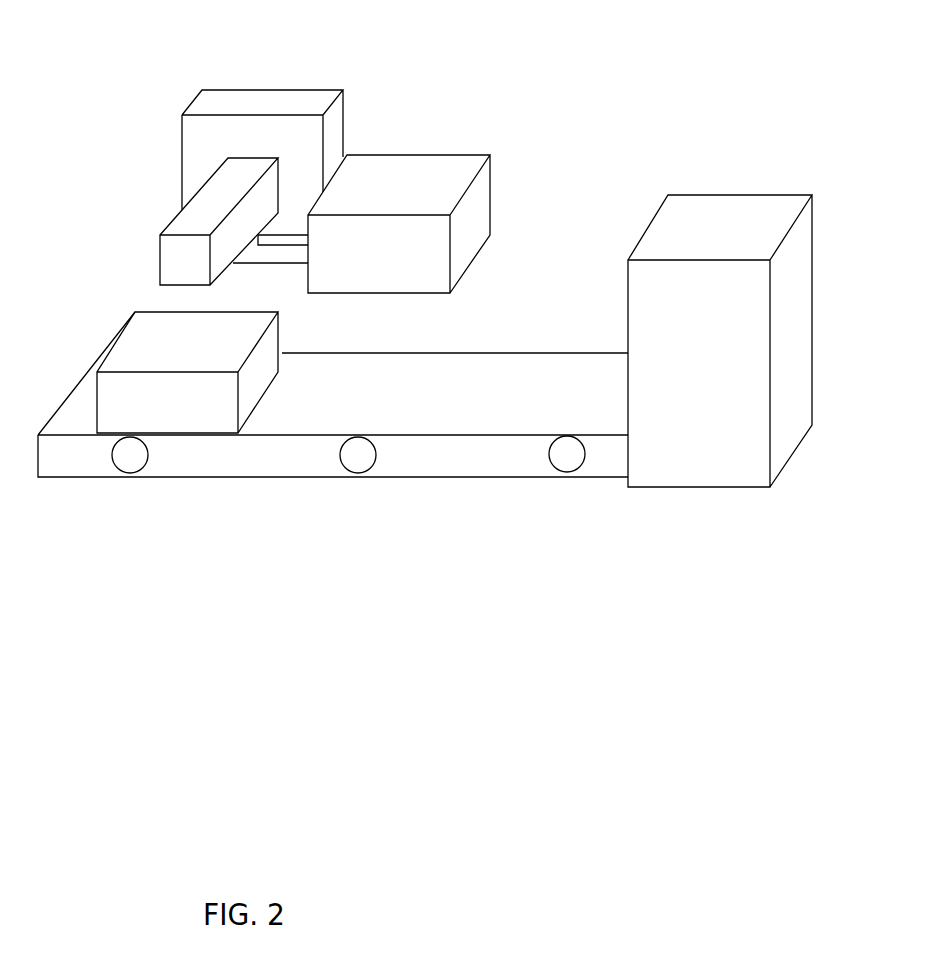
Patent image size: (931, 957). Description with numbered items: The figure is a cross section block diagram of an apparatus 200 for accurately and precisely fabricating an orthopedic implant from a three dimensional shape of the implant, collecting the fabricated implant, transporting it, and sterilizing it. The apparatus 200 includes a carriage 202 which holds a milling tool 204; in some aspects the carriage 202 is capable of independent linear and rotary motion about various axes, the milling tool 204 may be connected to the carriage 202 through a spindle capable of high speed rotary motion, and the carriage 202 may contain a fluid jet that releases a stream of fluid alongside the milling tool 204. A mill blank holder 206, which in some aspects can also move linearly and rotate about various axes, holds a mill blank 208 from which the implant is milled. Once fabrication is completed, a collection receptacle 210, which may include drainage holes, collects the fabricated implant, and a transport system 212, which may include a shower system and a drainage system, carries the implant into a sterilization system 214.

The apparatus 200 is at (642, 865).
The carriage 202 is at (482, 197).
The milling tool 204 is at (280, 252).
The mill blank holder 206 is at (235, 103).
The mill blank 208 is at (232, 190).
The collection receptacle 210 is at (183, 418).
The transport system 212 is at (432, 427).
The sterilization system 214 is at (698, 490).